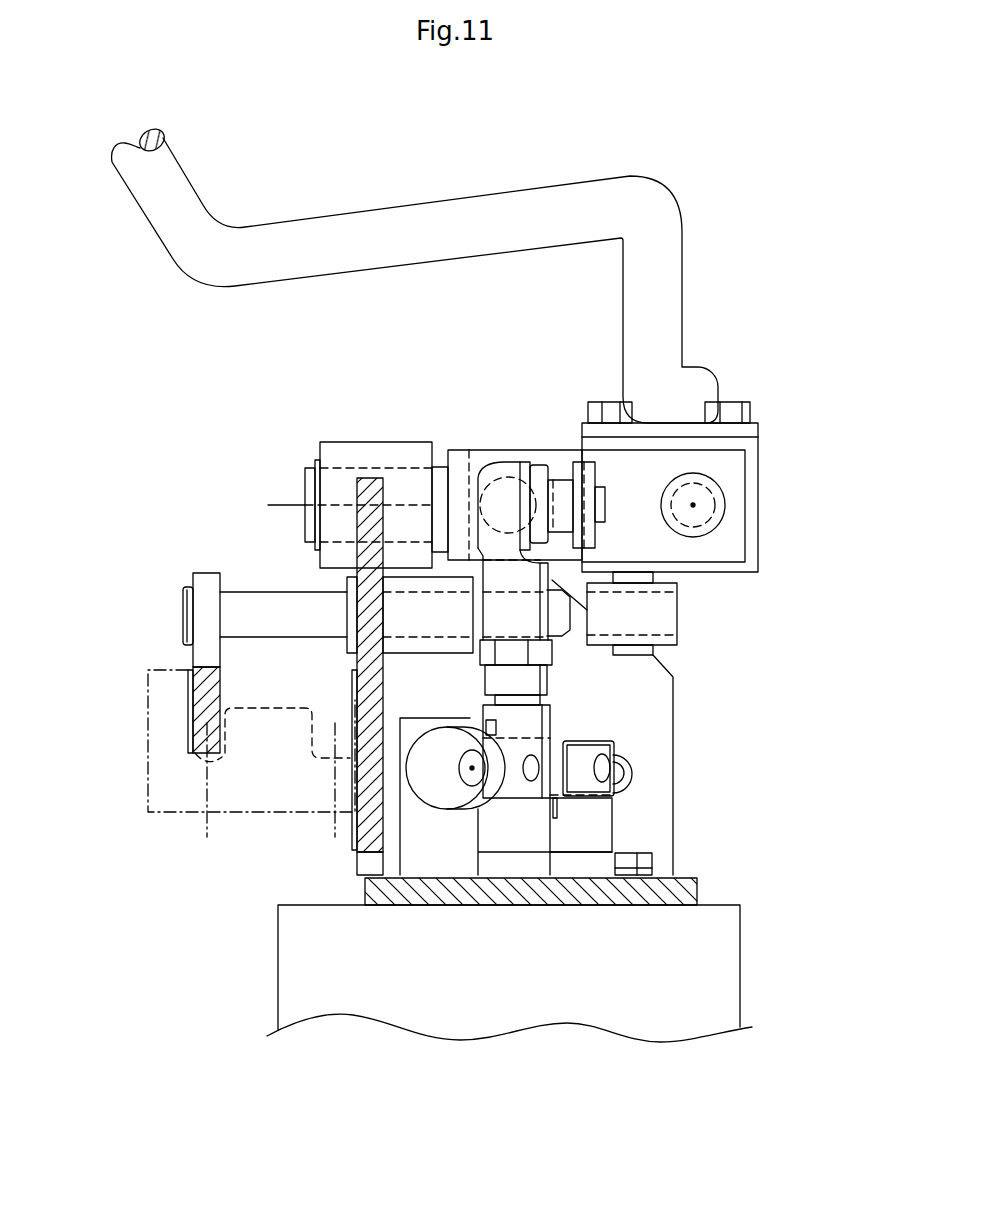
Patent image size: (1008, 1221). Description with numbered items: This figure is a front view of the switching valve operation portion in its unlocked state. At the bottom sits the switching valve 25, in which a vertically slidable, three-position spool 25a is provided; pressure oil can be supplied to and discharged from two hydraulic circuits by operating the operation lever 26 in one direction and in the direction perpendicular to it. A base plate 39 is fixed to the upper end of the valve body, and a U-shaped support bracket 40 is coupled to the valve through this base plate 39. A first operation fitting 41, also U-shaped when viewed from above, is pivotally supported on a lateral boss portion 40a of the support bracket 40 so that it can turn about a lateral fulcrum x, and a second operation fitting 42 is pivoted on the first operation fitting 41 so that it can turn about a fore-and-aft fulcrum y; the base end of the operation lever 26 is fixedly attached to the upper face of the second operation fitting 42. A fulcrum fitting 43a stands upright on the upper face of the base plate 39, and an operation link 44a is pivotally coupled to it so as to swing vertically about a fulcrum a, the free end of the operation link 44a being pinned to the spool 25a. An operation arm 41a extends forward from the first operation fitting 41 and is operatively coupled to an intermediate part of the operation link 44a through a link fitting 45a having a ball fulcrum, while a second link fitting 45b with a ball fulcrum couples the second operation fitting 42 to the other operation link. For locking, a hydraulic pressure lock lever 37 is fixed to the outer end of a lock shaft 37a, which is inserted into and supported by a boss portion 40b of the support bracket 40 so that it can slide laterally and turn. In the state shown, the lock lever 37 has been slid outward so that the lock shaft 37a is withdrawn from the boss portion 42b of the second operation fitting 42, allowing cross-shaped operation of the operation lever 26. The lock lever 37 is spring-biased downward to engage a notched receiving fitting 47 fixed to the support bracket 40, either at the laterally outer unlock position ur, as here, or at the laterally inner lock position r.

The operation lever 26 is at (425, 207).
The support bracket 40 is at (365, 477).
The lateral boss portion 40a is at (398, 440).
The boss portion 40b is at (422, 648).
The first operation fitting 41 is at (498, 448).
The operation arm 41a is at (572, 470).
The second operation fitting 42 is at (758, 513).
The boss portion 42b is at (677, 648).
The link fitting 45b is at (550, 675).
The link fitting 45a is at (533, 717).
The operation link 44a is at (643, 773).
The spool 25a is at (603, 825).
The fulcrum fitting 43a is at (468, 830).
The base plate 39 is at (697, 882).
The switching valve 25 is at (750, 967).
The hydraulic pressure lock lever 37 is at (193, 660).
The lock shaft 37a is at (293, 598).
The notched receiving fitting 47 is at (148, 752).
The lateral fulcrum x is at (339, 503).
The fore-and-aft fulcrum y is at (693, 505).
The fulcrum a is at (472, 768).
The unlock position ur is at (206, 794).
The lock position r is at (335, 794).